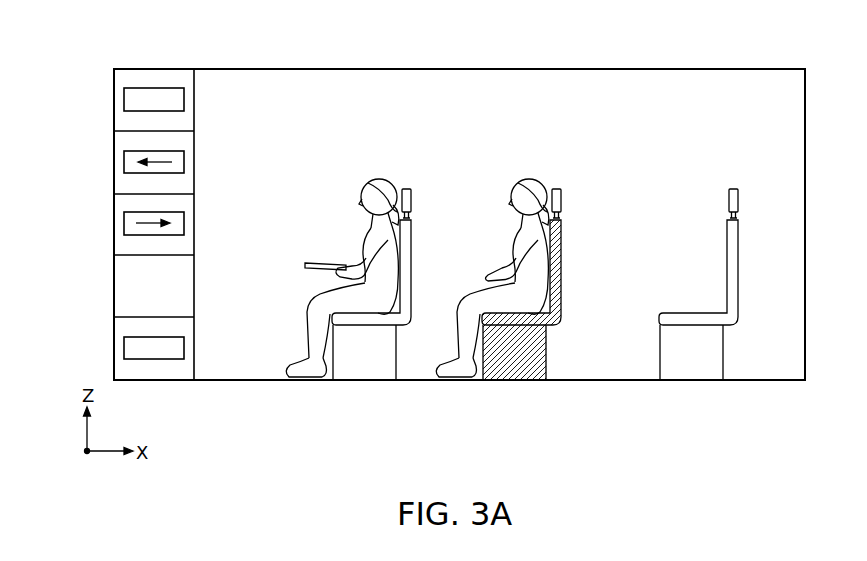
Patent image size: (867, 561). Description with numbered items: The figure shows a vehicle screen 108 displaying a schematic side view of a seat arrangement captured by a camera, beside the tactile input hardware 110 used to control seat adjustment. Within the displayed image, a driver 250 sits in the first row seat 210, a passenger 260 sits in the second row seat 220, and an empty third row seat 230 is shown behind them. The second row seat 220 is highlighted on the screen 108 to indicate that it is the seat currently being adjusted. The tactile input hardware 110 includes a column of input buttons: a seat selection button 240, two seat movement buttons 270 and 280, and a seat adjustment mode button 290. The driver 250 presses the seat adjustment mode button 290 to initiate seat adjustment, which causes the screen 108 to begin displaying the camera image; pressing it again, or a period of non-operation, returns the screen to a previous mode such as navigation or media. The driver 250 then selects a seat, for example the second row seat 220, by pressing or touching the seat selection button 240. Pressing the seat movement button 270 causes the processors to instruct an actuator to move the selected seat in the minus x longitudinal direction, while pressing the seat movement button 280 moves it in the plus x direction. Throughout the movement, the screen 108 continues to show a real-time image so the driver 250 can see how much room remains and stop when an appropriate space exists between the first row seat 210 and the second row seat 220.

The screen 108 is at (468, 69).
The tactile input hardware 110 is at (163, 69).
The first row seat 210 is at (408, 188).
The second row seat 220 is at (558, 188).
The third row seat 230 is at (735, 188).
The seat selection button 240 is at (124, 100).
The driver 250 is at (379, 180).
The passenger 260 is at (529, 180).
The seat movement button 270 is at (124, 163).
The seat movement button 280 is at (124, 224).
The seat adjustment mode button 290 is at (124, 347).